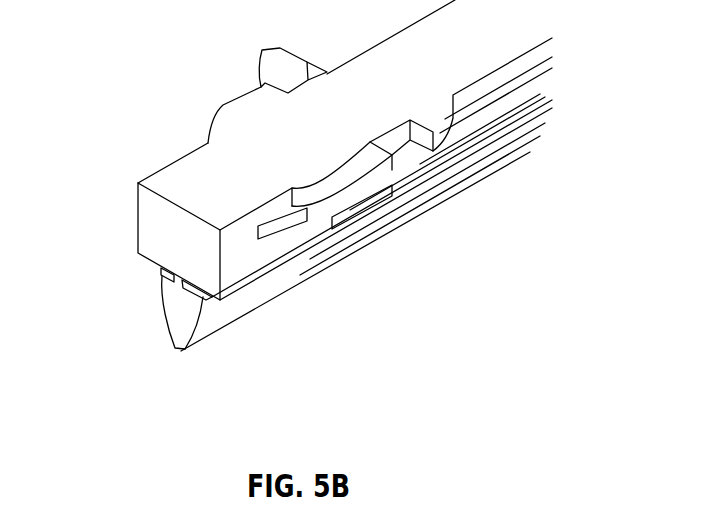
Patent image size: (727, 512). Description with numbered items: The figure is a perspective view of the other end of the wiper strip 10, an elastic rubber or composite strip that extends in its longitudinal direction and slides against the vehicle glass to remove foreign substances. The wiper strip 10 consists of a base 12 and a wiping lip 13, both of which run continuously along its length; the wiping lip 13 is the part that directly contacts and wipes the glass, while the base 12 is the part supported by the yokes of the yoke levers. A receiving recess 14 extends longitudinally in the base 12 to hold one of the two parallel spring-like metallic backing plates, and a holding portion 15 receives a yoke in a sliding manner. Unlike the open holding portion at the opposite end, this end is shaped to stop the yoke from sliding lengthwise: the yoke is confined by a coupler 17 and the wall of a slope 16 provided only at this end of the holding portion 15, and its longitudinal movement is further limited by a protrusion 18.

The wiper strip 10 is at (77, 87).
The base 12 is at (170, 165).
The wiping lip 13 is at (213, 334).
The receiving recess 14 is at (533, 78).
The holding portion 15 is at (491, 136).
The slope 16 is at (414, 181).
The coupler 17 is at (368, 205).
The protrusion 18 is at (262, 62).